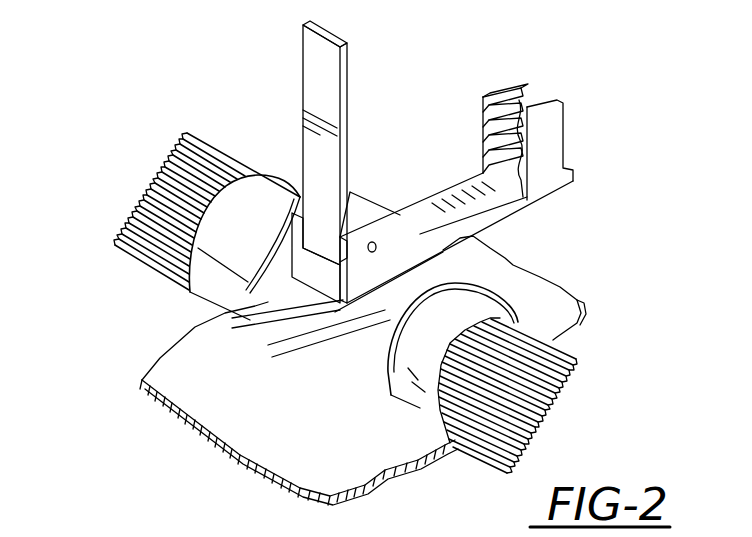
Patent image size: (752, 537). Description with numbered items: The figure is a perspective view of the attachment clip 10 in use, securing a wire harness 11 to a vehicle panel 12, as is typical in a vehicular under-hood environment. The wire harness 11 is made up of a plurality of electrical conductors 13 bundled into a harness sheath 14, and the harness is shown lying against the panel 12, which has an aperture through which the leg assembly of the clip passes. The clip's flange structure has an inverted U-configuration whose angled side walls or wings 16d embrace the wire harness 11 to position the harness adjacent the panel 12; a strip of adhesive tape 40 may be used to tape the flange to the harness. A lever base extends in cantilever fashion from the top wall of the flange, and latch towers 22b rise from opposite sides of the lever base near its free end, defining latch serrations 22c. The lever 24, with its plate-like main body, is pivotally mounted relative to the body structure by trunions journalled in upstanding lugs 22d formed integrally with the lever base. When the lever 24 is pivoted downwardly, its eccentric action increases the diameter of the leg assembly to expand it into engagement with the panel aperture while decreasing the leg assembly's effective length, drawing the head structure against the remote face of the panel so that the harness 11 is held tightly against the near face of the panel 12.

The attachment clip 10 is at (407, 132).
The wire harness 11 is at (282, 158).
The vehicle panel 12 is at (143, 405).
The electrical conductors 13 is at (568, 350).
The harness sheath 14 is at (410, 407).
The angled side walls or wings 16d is at (307, 353).
The latch towers 22b is at (557, 145).
The latch serrations 22c is at (527, 93).
The upstanding lugs 22d is at (398, 250).
The lever 24 is at (348, 90).
The strip of adhesive tape 40 is at (200, 302).